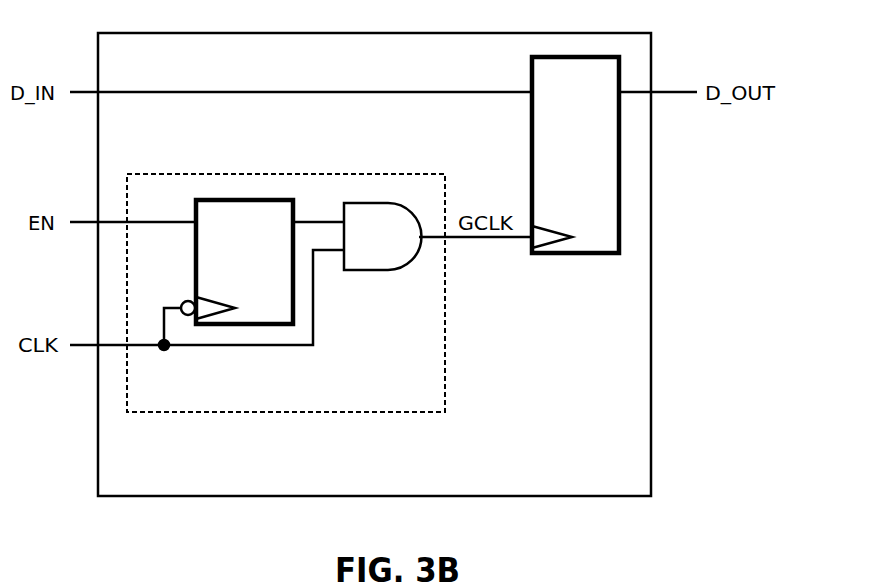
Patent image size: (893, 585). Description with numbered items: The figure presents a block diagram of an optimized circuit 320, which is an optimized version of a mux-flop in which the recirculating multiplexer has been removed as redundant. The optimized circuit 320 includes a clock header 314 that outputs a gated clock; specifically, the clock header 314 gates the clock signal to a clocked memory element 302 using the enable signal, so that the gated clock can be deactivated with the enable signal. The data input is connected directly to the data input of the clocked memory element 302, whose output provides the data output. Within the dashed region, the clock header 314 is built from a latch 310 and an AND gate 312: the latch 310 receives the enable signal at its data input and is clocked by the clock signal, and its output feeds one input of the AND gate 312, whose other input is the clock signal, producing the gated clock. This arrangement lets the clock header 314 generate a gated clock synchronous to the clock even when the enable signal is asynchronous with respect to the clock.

The clocked memory element 302 is at (575, 155).
The latch 310 is at (237, 262).
The AND gate 312 is at (382, 236).
The clock header 314 is at (286, 293).
The optimized circuit 320 is at (374, 264).